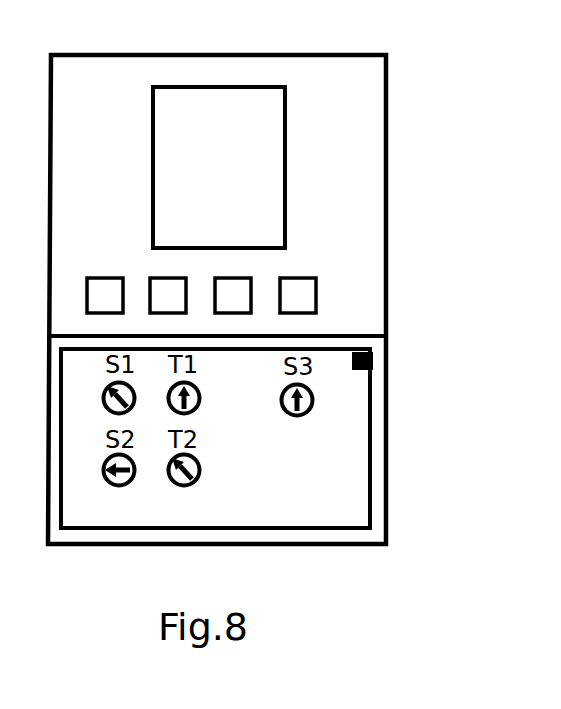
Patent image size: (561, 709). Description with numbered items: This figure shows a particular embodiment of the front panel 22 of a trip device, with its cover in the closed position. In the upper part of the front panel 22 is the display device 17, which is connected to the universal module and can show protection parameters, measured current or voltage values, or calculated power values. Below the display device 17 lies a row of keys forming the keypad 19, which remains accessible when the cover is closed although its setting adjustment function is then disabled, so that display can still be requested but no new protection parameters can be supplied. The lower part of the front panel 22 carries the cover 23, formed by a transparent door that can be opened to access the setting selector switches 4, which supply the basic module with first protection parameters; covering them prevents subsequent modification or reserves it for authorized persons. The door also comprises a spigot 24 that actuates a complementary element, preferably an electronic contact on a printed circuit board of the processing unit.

The selector switches 4 is at (314, 400).
The display device 17 is at (279, 128).
The keypad 19 is at (307, 297).
The front panel 22 is at (379, 186).
The cover 23 is at (361, 516).
The spigot 24 is at (373, 359).